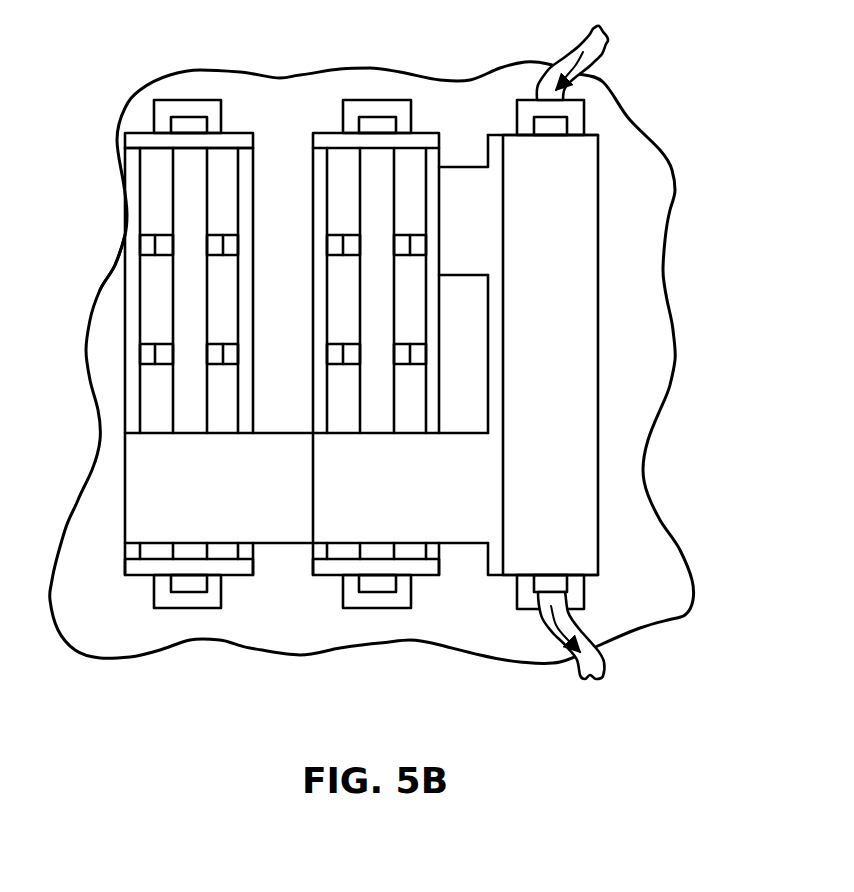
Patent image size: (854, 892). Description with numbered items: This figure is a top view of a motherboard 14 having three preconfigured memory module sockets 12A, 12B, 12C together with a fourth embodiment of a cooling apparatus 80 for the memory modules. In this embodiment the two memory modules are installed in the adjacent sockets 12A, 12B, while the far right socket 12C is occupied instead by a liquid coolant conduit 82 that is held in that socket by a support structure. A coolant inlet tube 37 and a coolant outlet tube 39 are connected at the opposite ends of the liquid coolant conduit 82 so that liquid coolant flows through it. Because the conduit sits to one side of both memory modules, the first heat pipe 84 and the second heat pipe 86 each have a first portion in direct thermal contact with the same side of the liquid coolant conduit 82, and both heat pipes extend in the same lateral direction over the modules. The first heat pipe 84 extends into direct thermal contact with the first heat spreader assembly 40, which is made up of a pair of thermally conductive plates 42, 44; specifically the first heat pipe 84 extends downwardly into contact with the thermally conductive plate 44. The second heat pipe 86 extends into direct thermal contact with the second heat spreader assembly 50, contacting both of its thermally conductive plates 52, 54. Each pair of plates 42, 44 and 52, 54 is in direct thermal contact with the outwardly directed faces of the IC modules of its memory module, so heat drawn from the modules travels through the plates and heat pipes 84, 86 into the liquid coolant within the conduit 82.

The memory module socket 12A is at (180, 608).
The memory module socket 12B is at (413, 592).
The memory module socket 12C is at (587, 596).
The motherboard 14 is at (577, 446).
The coolant inlet tube 37 is at (612, 56).
The coolant outlet tube 39 is at (575, 683).
The first heat spreader assembly 40 is at (303, 124).
The thermally conductive plate 42 is at (312, 288).
The thermally conductive plate 44 is at (440, 318).
The second heat spreader assembly 50 is at (116, 135).
The thermally conductive plate 52 is at (253, 168).
The thermally conductive plate 54 is at (122, 318).
The cooling apparatus 80 is at (491, 101).
The liquid coolant conduit 82 is at (580, 205).
The first heat pipe 84 is at (463, 205).
The second heat pipe 86 is at (306, 488).